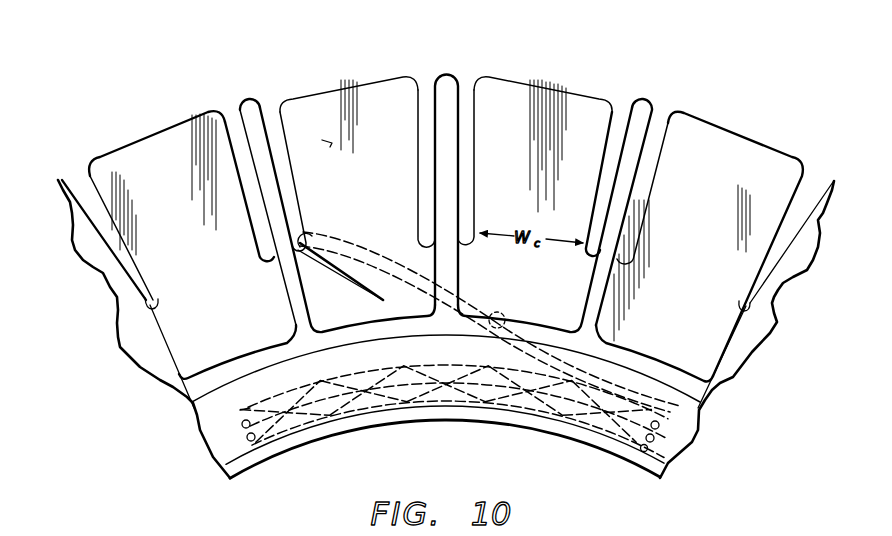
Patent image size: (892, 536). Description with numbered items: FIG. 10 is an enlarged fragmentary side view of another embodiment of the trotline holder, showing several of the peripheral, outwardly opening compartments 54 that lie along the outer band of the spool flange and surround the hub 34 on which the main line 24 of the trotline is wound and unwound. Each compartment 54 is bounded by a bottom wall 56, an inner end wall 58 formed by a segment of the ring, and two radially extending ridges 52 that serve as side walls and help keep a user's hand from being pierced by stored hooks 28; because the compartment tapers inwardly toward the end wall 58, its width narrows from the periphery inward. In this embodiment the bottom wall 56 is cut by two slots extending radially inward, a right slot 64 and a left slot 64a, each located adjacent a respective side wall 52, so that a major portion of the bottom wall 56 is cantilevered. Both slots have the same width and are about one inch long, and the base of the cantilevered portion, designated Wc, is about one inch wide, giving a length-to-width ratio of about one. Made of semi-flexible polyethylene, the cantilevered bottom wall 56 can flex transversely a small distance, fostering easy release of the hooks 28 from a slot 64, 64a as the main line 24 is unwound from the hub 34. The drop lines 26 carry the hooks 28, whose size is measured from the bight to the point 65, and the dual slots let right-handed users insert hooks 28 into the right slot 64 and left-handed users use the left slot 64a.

The main line 24 is at (655, 415).
The drop lines 26 is at (670, 413).
The hooks 28 is at (331, 286).
The hub 34 is at (548, 433).
The ridges 52 is at (436, 170).
The compartments 54 is at (366, 114).
The bottom wall 56 is at (322, 140).
The end wall 58 is at (543, 330).
The right slot 64 is at (229, 118).
The left slot 64a is at (268, 108).
The point 65 is at (382, 302).